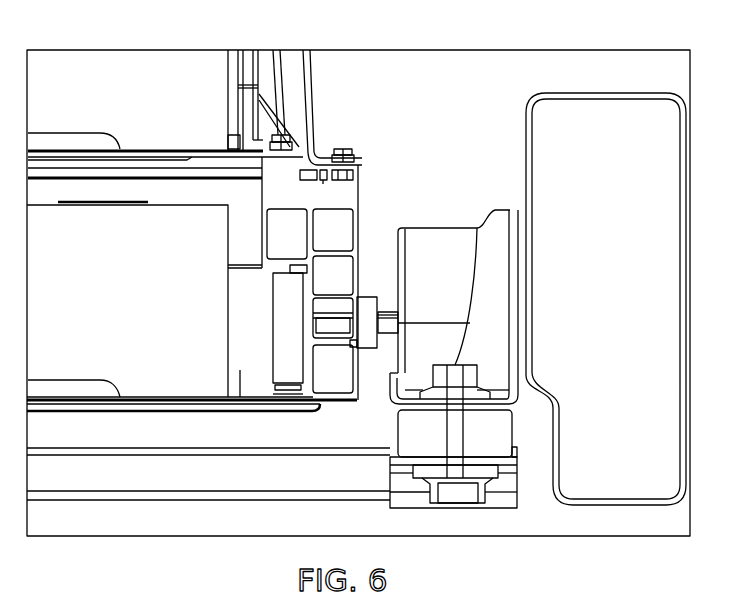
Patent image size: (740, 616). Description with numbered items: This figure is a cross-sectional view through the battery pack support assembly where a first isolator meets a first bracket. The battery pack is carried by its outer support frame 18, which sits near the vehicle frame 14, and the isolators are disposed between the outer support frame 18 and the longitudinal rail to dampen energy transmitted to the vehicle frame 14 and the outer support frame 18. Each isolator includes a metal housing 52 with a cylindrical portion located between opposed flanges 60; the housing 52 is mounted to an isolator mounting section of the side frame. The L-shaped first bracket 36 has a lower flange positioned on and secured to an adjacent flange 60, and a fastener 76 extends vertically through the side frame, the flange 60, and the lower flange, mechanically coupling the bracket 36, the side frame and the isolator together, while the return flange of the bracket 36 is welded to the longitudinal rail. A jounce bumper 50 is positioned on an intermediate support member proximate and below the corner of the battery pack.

The vehicle frame 14 is at (607, 95).
The outer support frame 18 is at (340, 188).
The first bracket 36 is at (495, 277).
The jounce bumper 50 is at (383, 325).
The housing 52 is at (435, 238).
The opposed flanges 60 is at (498, 443).
The fastener 76 is at (453, 418).